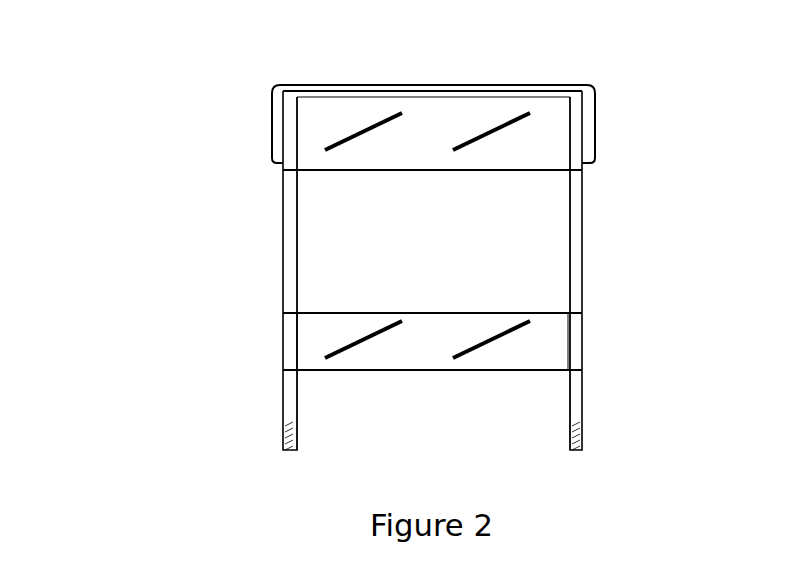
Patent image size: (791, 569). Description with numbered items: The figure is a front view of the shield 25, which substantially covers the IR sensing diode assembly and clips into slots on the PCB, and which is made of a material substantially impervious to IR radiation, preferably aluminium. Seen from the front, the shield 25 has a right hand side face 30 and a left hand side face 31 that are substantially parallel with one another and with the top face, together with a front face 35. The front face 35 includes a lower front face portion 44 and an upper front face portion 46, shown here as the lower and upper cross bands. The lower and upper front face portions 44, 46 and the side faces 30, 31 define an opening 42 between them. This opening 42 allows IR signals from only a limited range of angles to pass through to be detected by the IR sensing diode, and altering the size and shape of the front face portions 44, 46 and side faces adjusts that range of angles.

The shield 25 is at (383, 278).
The right hand side face 30 is at (583, 232).
The left hand side face 31 is at (283, 272).
The front face 35 is at (362, 355).
The opening 42 is at (512, 262).
The lower front face portion 44 is at (493, 367).
The upper front face portion 46 is at (455, 130).